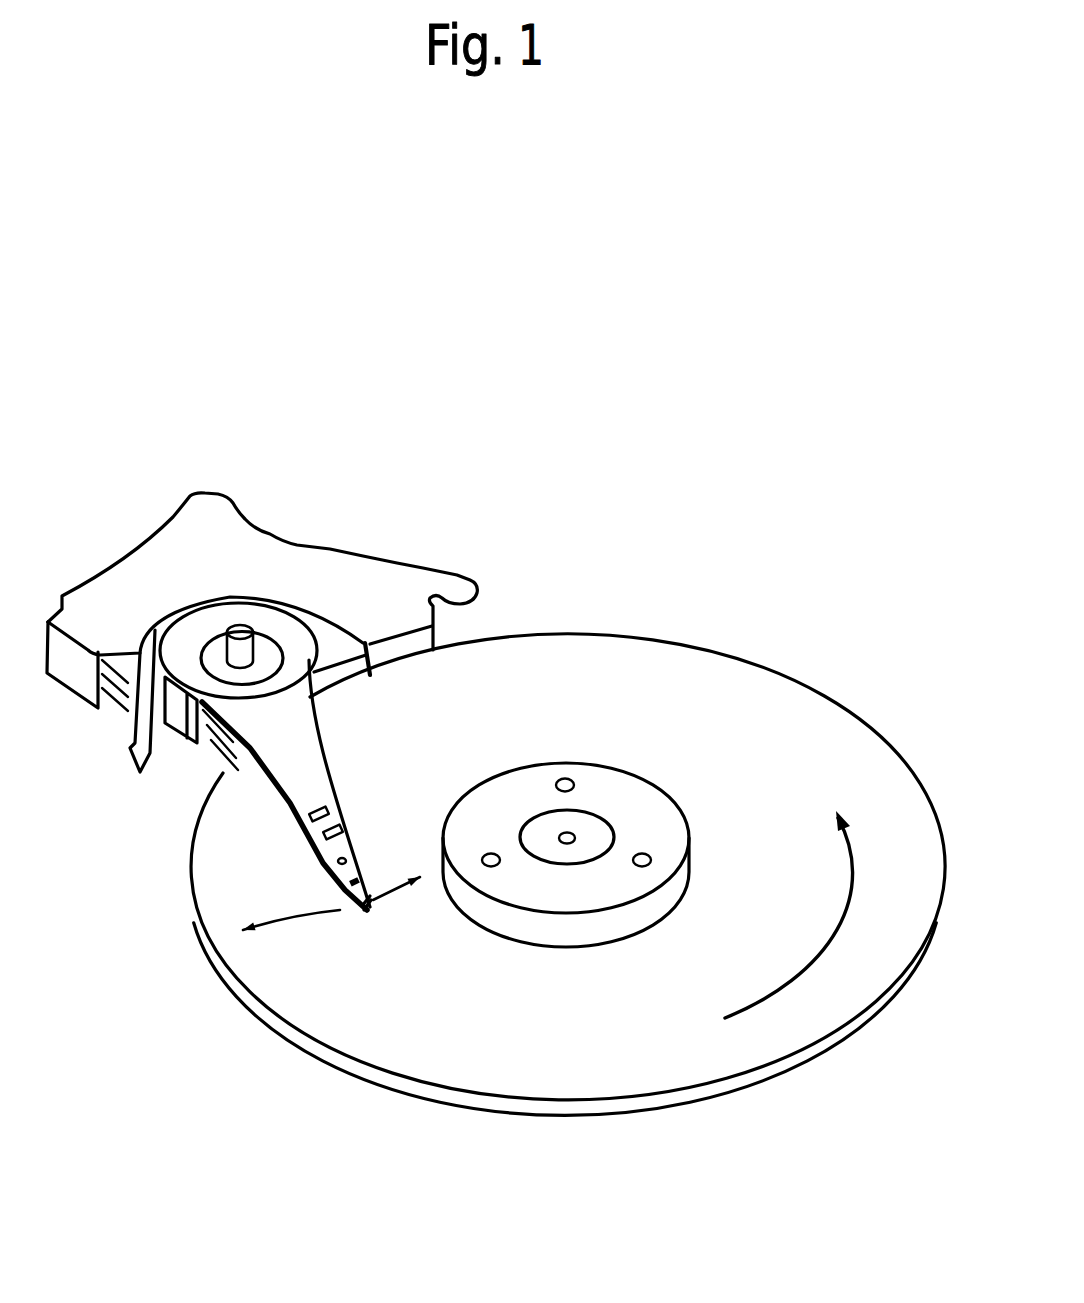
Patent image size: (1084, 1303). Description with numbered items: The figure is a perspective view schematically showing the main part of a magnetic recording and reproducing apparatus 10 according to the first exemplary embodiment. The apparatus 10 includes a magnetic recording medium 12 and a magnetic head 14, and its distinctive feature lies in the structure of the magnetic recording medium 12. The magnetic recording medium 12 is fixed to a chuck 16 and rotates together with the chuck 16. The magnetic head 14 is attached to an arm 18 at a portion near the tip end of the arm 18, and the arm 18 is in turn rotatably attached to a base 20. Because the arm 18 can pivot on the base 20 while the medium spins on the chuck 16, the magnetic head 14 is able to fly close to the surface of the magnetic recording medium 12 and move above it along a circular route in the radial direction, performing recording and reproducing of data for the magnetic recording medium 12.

The magnetic recording and reproducing apparatus 10 is at (496, 831).
The magnetic recording medium 12 is at (758, 690).
The magnetic head 14 is at (367, 910).
The chuck 16 is at (557, 933).
The arm 18 is at (325, 848).
The base 20 is at (300, 588).